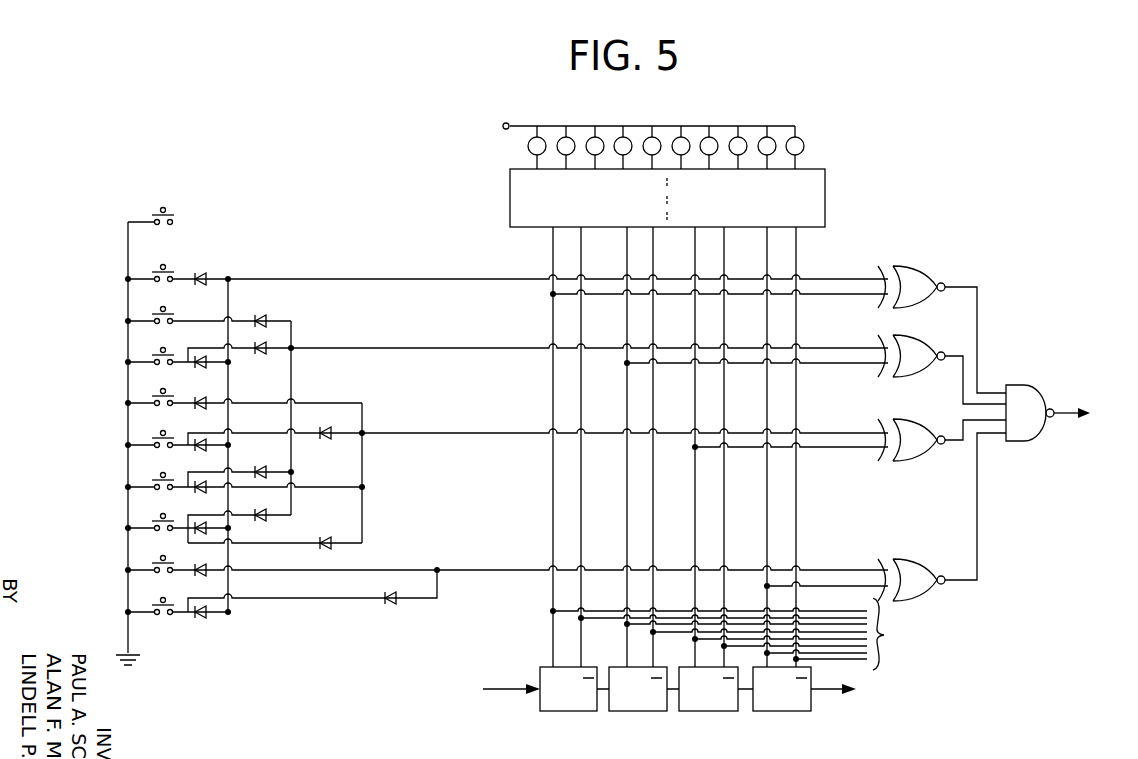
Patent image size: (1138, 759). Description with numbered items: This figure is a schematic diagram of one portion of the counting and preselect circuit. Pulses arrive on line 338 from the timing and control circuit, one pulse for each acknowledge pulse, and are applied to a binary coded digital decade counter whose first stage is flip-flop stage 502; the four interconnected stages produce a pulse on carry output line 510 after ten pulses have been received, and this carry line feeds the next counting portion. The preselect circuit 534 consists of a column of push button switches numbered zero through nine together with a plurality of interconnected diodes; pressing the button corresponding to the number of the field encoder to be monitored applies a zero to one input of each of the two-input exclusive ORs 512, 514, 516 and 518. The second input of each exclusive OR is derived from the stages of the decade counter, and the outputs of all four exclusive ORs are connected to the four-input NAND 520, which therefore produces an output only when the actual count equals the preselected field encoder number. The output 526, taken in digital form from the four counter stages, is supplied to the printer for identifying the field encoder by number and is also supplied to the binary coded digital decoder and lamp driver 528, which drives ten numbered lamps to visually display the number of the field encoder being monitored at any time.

The line 338 is at (490, 688).
The flip-flop stage 502 is at (566, 711).
The carry output line 510 is at (836, 697).
The two-input exclusive OR 512 is at (918, 266).
The two-input exclusive OR 514 is at (912, 336).
The two-input exclusive OR 516 is at (904, 420).
The two-input exclusive OR 518 is at (928, 592).
The four-input NAND 520 is at (1044, 392).
The output 526 is at (743, 634).
The binary coded digital decoder and lamp driver 528 is at (826, 197).
The preselect circuit 534 is at (118, 416).